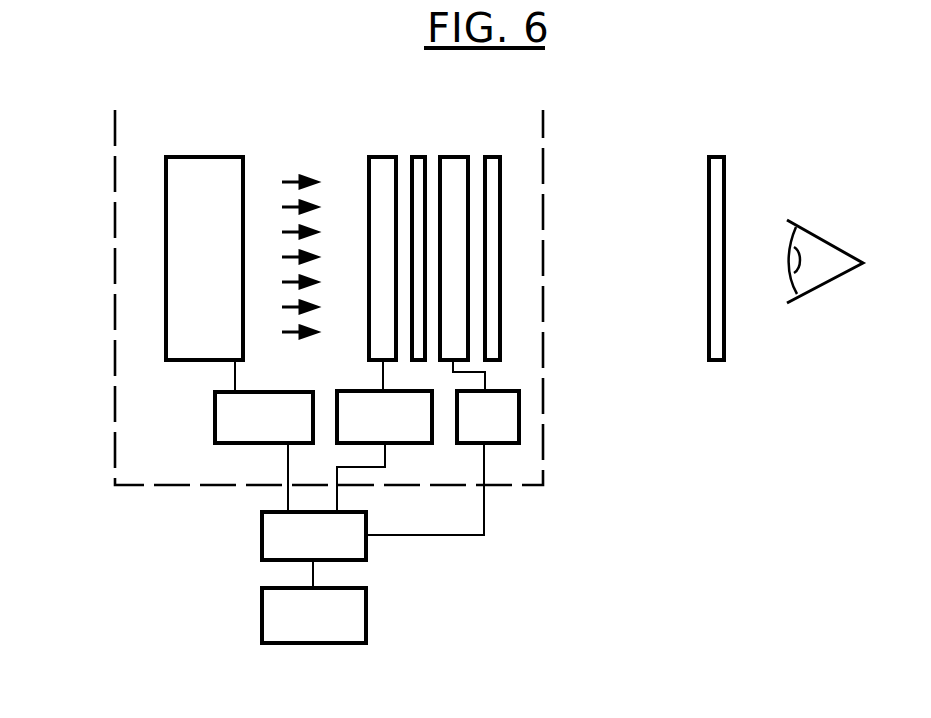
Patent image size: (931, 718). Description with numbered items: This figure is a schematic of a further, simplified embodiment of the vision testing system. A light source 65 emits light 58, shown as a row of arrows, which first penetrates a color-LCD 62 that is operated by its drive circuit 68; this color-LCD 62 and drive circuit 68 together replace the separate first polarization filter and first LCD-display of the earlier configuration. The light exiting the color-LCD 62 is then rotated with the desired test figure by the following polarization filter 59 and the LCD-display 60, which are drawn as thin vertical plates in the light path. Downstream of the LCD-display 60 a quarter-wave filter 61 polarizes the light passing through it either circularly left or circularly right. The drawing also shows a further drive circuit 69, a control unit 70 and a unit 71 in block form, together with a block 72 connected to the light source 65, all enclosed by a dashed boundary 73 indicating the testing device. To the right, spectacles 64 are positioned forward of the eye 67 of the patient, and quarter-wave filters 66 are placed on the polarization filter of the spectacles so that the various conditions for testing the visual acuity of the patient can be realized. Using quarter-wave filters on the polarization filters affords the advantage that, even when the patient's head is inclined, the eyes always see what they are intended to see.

The light 58 is at (292, 180).
The polarization filter 59 is at (418, 166).
The LCD-display 60 is at (454, 166).
The λ/4 filter 61 is at (491, 166).
The color-LCD 62 is at (382, 166).
The spectacles 64 is at (703, 148).
The light source 65 is at (203, 177).
The λ/4 filter 66 is at (714, 153).
The eye 67 is at (818, 252).
The drive circuit 68 is at (384, 436).
The drive circuit 69 is at (442, 447).
The control unit 70 is at (314, 550).
The input unit 71 is at (314, 615).
The light source control 72 is at (264, 436).
The display apparatus housing 73 is at (115, 233).